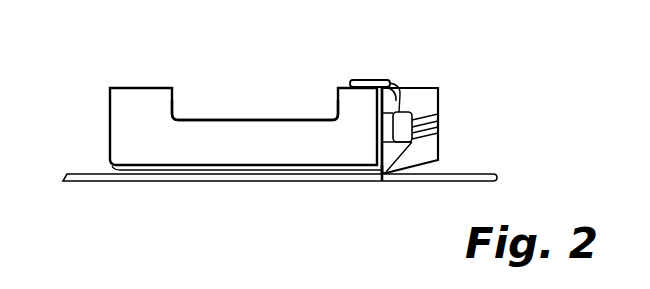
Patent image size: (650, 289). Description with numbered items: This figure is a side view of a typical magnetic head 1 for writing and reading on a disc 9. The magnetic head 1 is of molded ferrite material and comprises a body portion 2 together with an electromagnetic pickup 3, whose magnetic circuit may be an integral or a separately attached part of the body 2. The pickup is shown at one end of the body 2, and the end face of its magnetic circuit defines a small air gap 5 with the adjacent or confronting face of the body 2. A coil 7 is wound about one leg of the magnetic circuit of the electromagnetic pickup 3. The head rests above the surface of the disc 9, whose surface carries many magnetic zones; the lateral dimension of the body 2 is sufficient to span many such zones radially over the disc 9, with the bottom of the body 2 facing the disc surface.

The magnetic head 1 is at (228, 105).
The body portion 2 is at (152, 72).
The electromagnetic pickup 3 is at (420, 75).
The air gap 5 is at (383, 190).
The coil 7 is at (452, 114).
The disc 9 is at (485, 172).